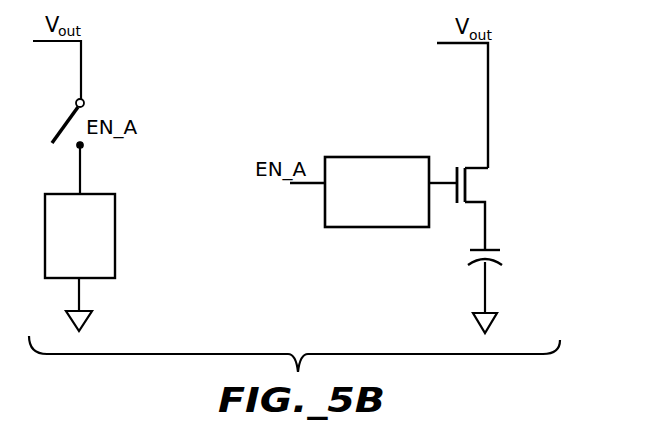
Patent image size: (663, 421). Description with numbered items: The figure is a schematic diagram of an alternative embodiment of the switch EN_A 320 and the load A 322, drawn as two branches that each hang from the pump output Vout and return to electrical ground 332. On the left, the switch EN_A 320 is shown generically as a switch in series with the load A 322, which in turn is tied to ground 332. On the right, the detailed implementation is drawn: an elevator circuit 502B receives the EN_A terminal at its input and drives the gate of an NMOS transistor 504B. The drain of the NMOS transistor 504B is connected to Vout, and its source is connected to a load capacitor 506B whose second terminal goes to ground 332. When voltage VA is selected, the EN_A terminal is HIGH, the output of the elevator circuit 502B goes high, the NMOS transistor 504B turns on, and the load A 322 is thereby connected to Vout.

The switch EN_A 320 is at (81, 83).
The load A 322 is at (93, 193).
The electrical ground 332 is at (83, 326).
The elevator circuit 502B is at (360, 157).
The NMOS transistor 504B is at (488, 157).
The load capacitor 506B is at (485, 245).